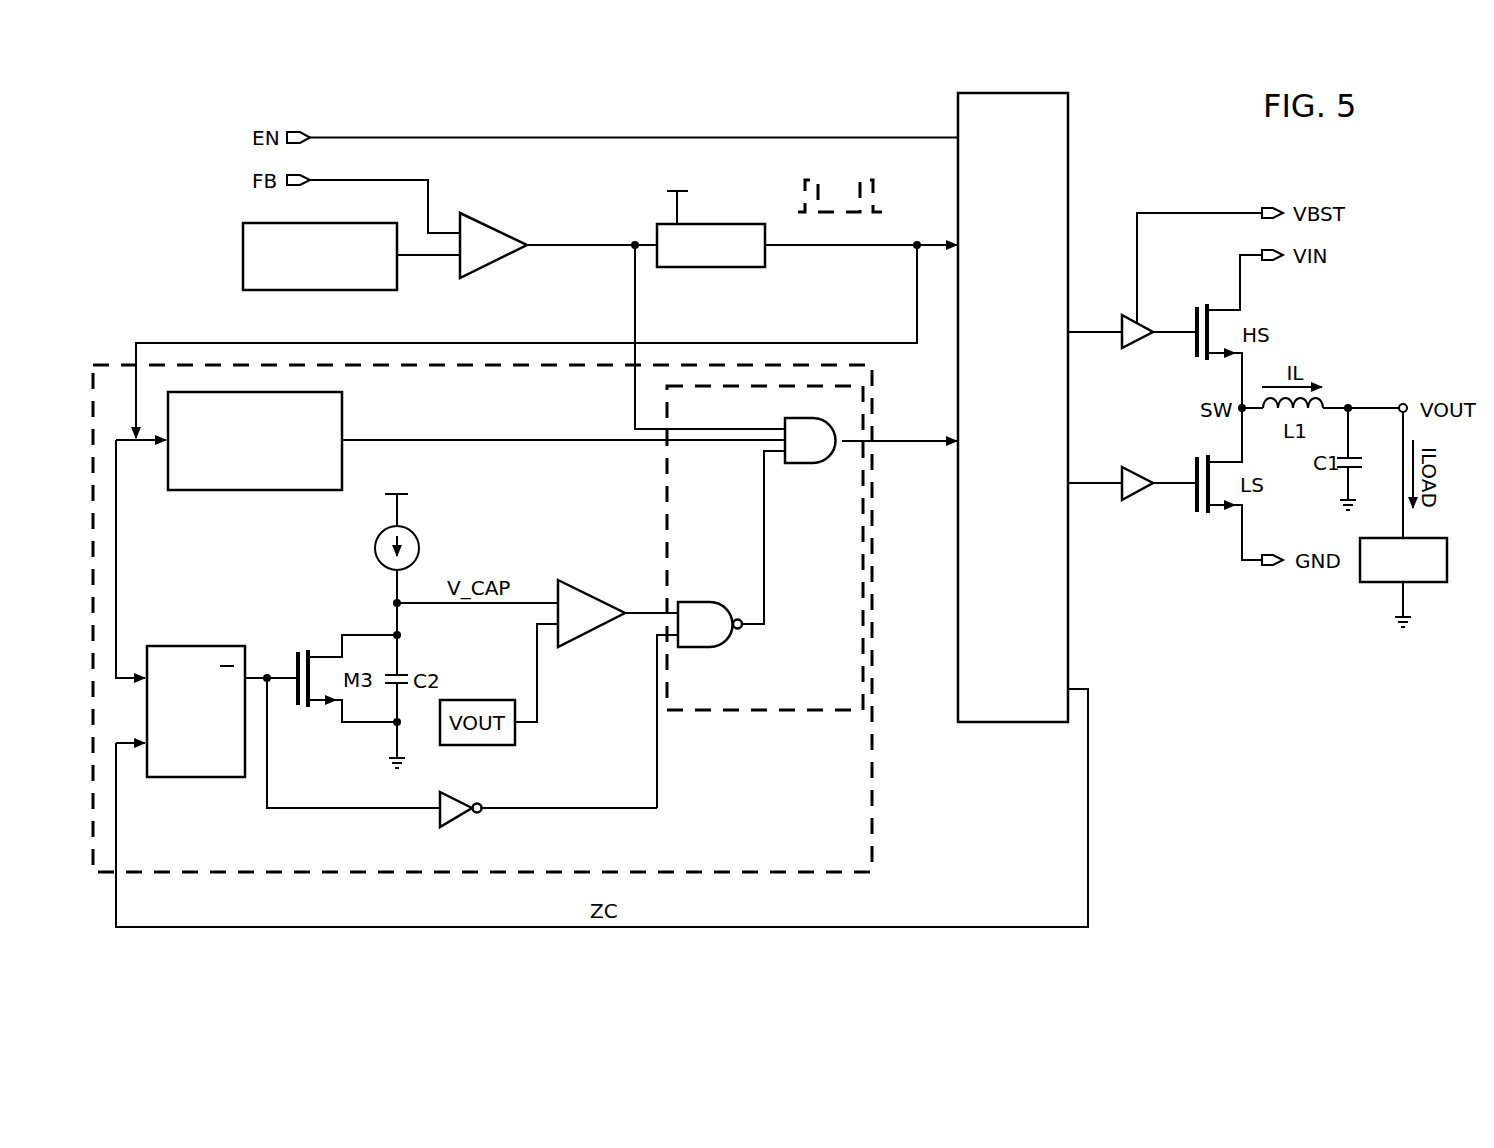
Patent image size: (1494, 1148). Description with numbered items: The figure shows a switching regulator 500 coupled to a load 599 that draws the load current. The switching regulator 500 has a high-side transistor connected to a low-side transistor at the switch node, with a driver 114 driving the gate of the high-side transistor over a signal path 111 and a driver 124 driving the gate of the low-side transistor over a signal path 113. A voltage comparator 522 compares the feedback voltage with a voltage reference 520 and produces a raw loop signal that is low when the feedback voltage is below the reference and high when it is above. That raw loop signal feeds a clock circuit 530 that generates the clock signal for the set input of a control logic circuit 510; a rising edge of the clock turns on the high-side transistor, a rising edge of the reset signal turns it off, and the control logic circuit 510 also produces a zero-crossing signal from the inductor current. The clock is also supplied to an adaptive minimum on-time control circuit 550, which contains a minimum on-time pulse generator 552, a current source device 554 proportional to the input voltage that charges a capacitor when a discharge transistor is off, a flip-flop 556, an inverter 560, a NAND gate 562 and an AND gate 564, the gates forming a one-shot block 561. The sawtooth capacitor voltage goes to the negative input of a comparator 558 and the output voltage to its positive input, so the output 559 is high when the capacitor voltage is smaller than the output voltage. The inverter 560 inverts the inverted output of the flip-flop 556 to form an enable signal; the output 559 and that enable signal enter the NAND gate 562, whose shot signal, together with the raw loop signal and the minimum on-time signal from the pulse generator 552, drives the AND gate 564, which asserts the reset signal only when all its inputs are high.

The switching regulator 500 is at (166, 122).
The control logic circuit 510 is at (1033, 385).
The voltage reference 520 is at (243, 243).
The voltage comparator 522 is at (493, 225).
The clock circuit 530 is at (710, 268).
The high-side control signal 111 is at (1087, 333).
The low-side control signal 113 is at (1090, 485).
The driver 114 is at (1137, 343).
The driver 124 is at (1140, 490).
The load 599 is at (1433, 582).
The adaptive minimum on-time control circuit 550 is at (878, 751).
The minimum on-time pulse generator 552 is at (257, 492).
The current source device 554 is at (375, 548).
The D flip-flop 556 is at (197, 780).
The comparator 558 is at (593, 633).
The output of comparator 559 is at (650, 610).
The inverter 560 is at (463, 822).
The one-shot circuit 561 is at (778, 716).
The NAND gate 562 is at (703, 648).
The AND gate 564 is at (812, 466).